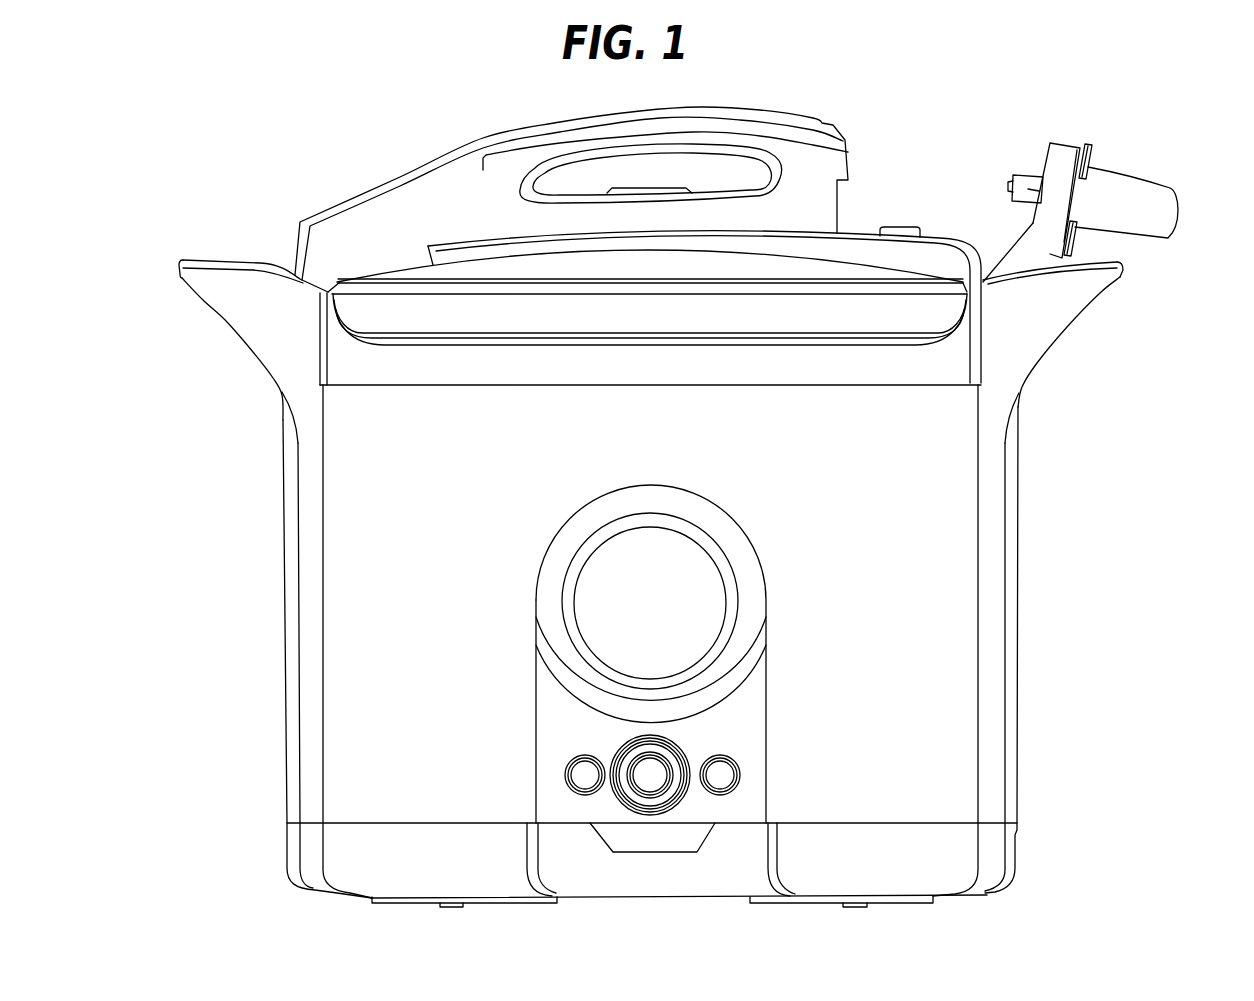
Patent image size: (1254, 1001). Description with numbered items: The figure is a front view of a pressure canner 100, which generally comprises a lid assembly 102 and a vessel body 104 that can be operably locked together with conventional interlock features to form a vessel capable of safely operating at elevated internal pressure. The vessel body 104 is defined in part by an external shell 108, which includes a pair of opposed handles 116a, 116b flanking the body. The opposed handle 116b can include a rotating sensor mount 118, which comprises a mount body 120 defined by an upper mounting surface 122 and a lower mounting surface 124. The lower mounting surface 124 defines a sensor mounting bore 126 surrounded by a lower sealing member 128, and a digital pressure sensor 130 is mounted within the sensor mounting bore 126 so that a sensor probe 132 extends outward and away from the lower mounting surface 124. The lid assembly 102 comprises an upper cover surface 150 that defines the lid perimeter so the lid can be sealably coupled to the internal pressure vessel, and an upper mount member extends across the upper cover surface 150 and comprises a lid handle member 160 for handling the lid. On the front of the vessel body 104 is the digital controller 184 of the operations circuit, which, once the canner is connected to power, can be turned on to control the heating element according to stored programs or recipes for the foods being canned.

The pressure canner 100 is at (233, 158).
The lid assembly 102 is at (478, 152).
The vessel body 104 is at (285, 600).
The external shell 108 is at (978, 675).
The opposed handle 116a is at (180, 266).
The opposed handle 116b is at (1108, 288).
The rotating sensor mount 118 is at (1065, 140).
The mount body 120 is at (1047, 250).
The upper mounting surface 122 is at (1075, 245).
The lower mounting surface 124 is at (1042, 170).
The sensor mounting bore 126 is at (1040, 200).
The lower sealing member 128 is at (1045, 177).
The digital pressure sensor 130 is at (1082, 193).
The sensor probe 132 is at (1040, 176).
The upper cover surface 150 is at (508, 268).
The lid handle member 160 is at (653, 105).
The digital controller 184 is at (628, 795).